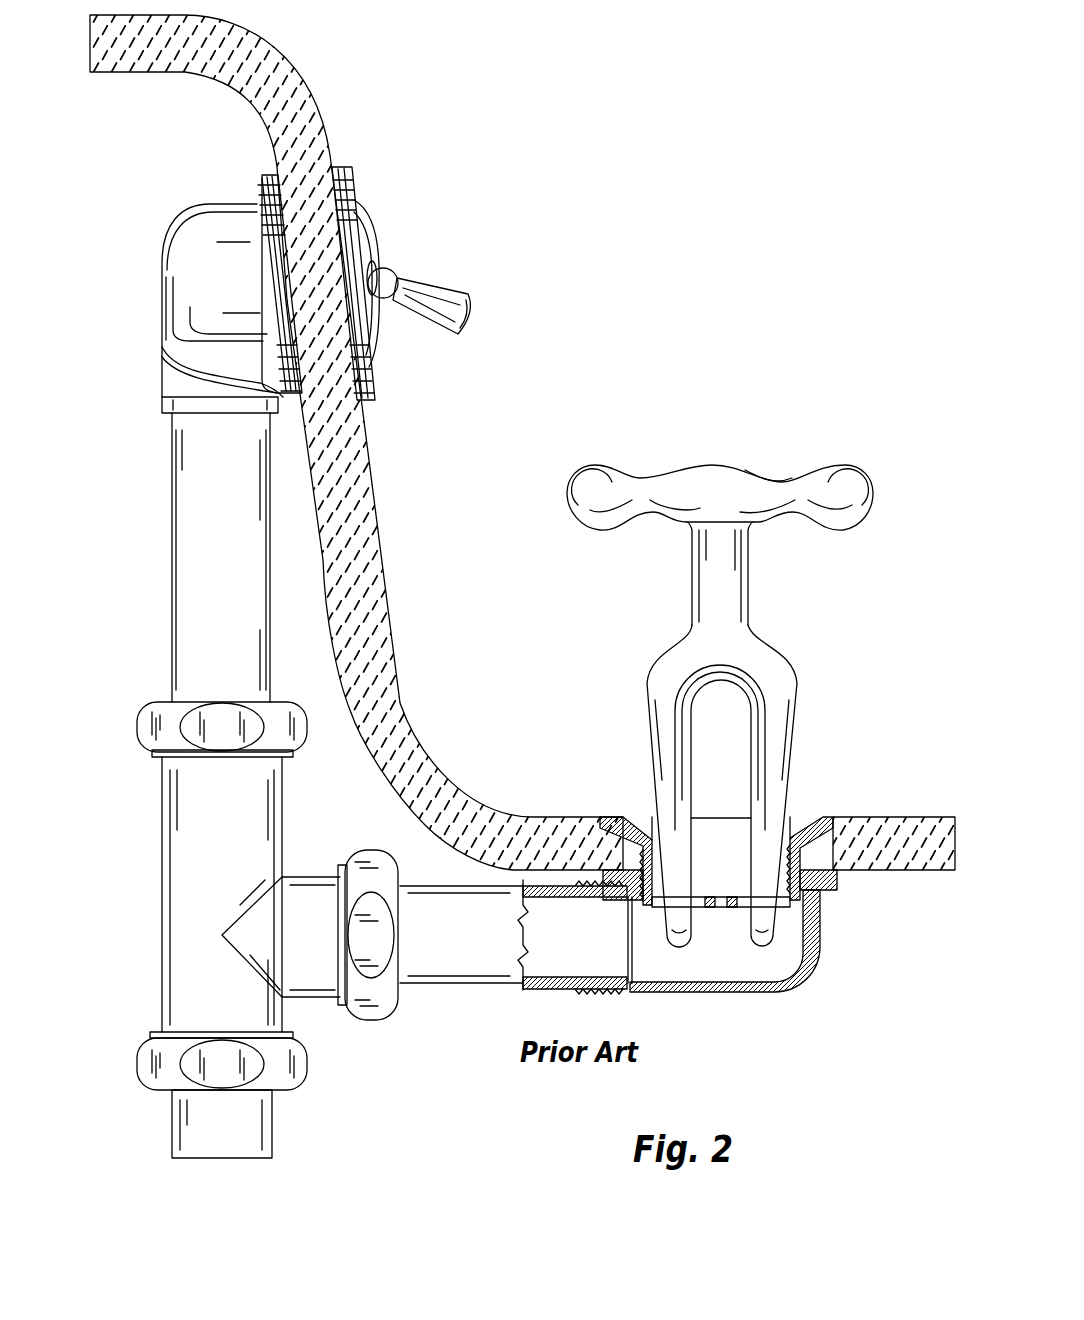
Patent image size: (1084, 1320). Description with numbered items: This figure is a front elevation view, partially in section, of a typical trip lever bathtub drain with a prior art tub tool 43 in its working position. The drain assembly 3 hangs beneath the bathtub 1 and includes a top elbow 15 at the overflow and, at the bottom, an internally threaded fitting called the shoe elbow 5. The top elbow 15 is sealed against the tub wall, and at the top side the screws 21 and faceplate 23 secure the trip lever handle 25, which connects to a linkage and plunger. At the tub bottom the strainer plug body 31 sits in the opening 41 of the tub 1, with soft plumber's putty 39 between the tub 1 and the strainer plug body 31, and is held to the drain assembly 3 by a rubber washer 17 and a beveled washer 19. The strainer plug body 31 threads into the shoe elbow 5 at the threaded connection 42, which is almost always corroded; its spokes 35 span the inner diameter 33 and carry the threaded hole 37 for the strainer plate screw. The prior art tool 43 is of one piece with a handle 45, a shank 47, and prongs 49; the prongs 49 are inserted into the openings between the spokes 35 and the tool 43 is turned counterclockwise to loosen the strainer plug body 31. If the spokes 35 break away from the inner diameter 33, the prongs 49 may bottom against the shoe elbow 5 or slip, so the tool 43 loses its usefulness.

The bathtub 1 is at (300, 75).
The drain assembly 3 is at (405, 1080).
The shoe elbow 5 is at (778, 992).
The top elbow 15 is at (222, 205).
The rubber washer 17 is at (835, 870).
The beveled washer 19 is at (262, 185).
The screws 21 is at (374, 240).
The faceplate 23 is at (355, 185).
The trip lever handle 25 is at (442, 285).
The strainer plug body 31 is at (800, 820).
The inner diameter 33 is at (777, 850).
The spokes 35 is at (697, 897).
The threaded hole 37 is at (715, 910).
The plumber's putty 39 is at (612, 815).
The opening 41 is at (835, 858).
The threaded connection 42 is at (815, 893).
The prior art tool 43 is at (743, 400).
The handle 45 is at (873, 497).
The shank 47 is at (750, 600).
The prongs 49 is at (648, 760).